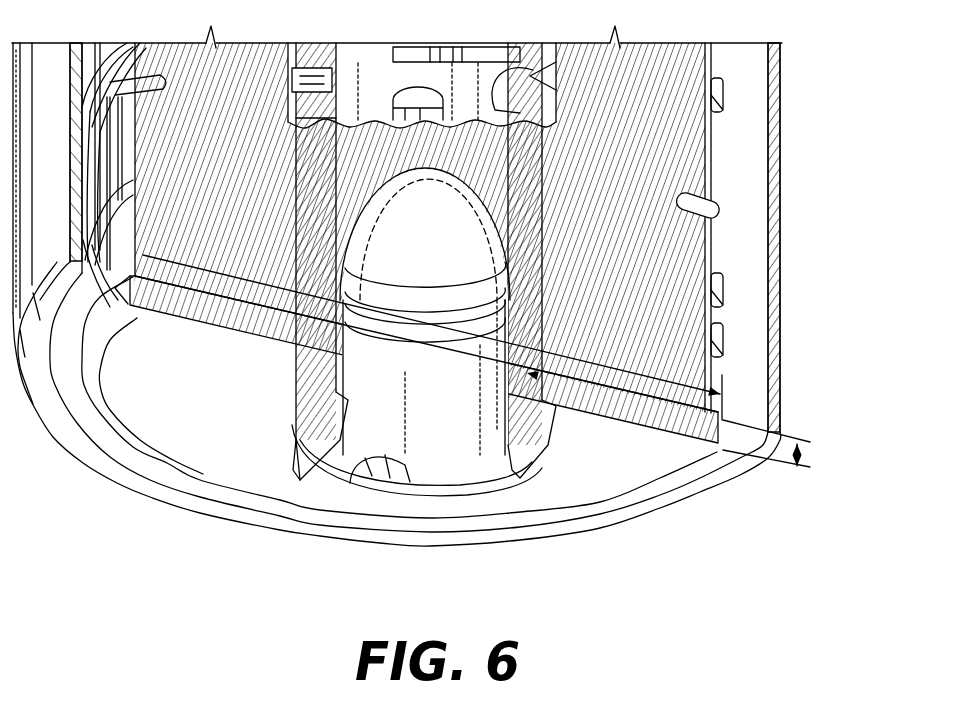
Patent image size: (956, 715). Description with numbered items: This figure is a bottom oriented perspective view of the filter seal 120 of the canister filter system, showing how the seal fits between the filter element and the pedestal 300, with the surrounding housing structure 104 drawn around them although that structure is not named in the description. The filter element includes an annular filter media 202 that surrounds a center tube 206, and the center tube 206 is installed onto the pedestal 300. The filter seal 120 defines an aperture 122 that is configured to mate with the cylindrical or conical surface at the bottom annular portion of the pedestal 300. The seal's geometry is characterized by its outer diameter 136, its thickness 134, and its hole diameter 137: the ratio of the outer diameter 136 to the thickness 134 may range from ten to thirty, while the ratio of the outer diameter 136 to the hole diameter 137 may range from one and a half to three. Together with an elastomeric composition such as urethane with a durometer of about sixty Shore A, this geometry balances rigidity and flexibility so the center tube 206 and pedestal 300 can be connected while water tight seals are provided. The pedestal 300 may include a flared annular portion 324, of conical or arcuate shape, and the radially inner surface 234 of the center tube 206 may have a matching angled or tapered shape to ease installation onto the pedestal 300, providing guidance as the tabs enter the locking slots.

The container 104 is at (784, 263).
The filter seal 120 is at (640, 388).
The aperture 122 is at (292, 352).
The thickness 134 is at (800, 455).
The outer diameter 136 is at (143, 254).
The hole diameter 137 is at (466, 362).
The annular filter media 202 is at (664, 274).
The center tube 206 is at (563, 121).
The radially inner surface 234 is at (347, 277).
The pedestal 300 is at (511, 217).
The flared annular portion 324 is at (345, 262).